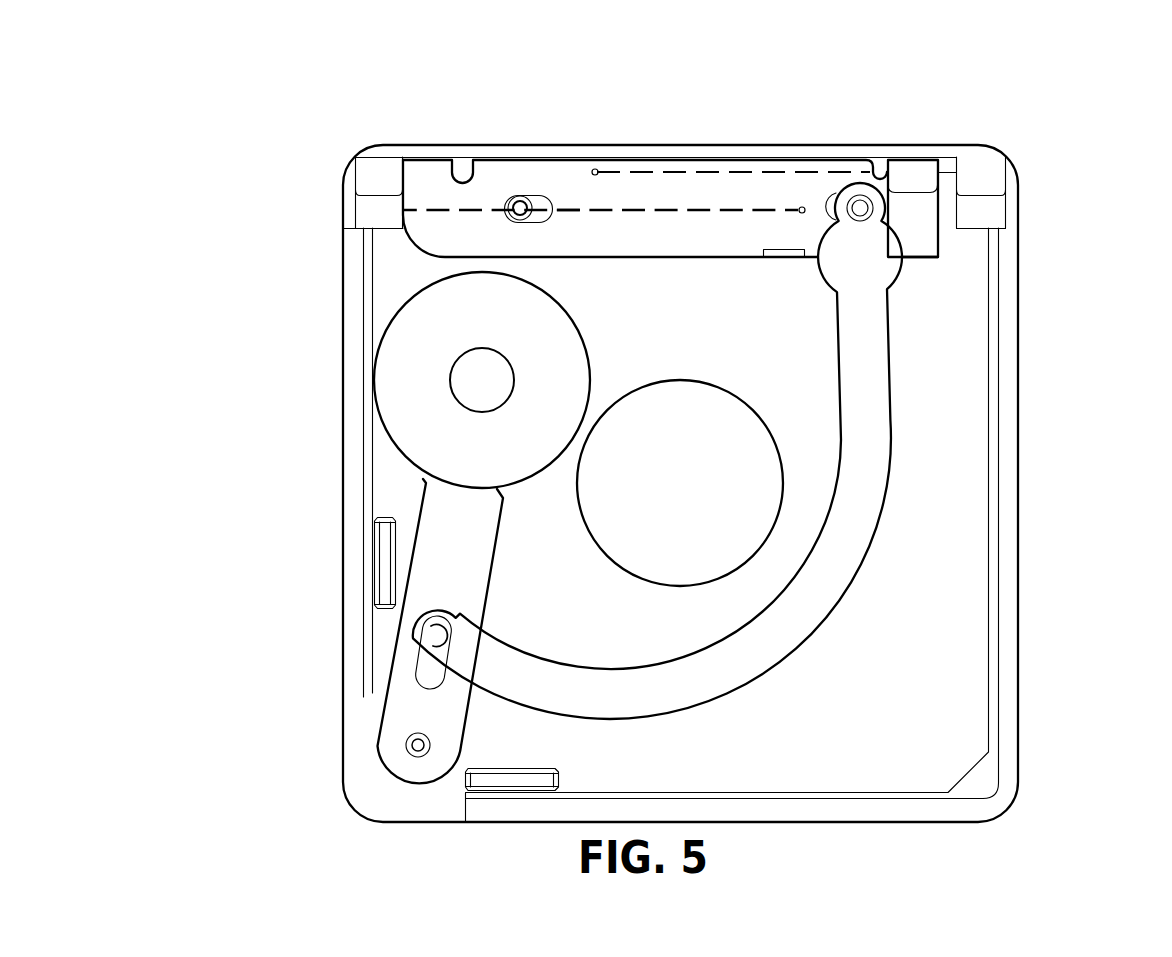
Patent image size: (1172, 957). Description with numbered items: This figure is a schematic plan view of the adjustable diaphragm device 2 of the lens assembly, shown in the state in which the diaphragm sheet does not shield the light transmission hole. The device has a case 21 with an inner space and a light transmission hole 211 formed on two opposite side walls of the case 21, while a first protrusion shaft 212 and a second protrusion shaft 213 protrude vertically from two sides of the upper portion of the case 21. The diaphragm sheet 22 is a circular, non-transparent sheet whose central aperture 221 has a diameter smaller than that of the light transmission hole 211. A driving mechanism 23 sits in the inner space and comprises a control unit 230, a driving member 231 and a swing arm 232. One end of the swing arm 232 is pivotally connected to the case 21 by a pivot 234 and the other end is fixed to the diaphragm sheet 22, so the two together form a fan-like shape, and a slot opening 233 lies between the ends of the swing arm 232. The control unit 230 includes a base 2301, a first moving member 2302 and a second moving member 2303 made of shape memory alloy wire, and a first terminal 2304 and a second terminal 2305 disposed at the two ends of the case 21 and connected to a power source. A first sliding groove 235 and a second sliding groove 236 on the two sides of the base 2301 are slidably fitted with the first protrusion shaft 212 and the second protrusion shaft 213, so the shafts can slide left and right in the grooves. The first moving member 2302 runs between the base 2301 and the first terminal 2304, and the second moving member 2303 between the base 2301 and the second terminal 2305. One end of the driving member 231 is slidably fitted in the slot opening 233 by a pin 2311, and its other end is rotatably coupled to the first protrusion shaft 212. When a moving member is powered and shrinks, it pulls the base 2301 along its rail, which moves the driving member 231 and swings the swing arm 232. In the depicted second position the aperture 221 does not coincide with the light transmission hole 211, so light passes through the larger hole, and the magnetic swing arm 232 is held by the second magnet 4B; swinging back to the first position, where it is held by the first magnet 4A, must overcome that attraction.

The adjustable diaphragm device 2 is at (1022, 168).
The case 21 is at (766, 155).
The light transmission hole 211 is at (745, 497).
The first protrusion shaft 212 is at (862, 205).
The second protrusion shaft 213 is at (517, 202).
The diaphragm sheet 22 is at (407, 363).
The aperture 221 is at (483, 380).
The driving mechanism 23 is at (780, 390).
The control unit 230 is at (846, 150).
The driving member 231 is at (802, 617).
The swing arm 232 is at (446, 538).
The slot opening 233 is at (432, 678).
The pivot 234 is at (410, 746).
The first sliding groove 235 is at (830, 194).
The second sliding groove 236 is at (540, 202).
The base 2301 is at (688, 200).
The first moving member 2302 is at (622, 165).
The second moving member 2303 is at (587, 210).
The first terminal 2304 is at (978, 180).
The second terminal 2305 is at (385, 177).
The pin 2311 is at (412, 621).
The first magnet 4A is at (514, 778).
The second magnet 4B is at (383, 570).